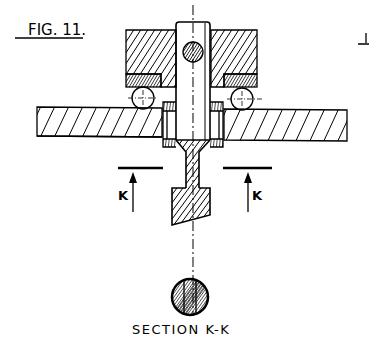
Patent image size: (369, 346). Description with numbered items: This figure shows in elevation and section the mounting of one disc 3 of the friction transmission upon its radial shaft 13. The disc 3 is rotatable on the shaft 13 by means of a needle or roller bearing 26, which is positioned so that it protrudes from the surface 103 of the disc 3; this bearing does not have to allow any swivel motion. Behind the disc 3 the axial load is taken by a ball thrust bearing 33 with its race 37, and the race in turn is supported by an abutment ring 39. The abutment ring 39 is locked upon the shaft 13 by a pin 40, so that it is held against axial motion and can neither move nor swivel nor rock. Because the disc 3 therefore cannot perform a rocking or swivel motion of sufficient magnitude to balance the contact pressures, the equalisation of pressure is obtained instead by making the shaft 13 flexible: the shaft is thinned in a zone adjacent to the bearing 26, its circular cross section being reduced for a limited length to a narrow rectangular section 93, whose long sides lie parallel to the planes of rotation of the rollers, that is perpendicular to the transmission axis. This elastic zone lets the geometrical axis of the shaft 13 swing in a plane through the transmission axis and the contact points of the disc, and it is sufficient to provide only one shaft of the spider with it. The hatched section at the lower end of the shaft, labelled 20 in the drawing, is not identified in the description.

The disc 3 is at (70, 110).
The radial shaft 13 is at (183, 36).
The lower block 20 is at (210, 213).
The needle bearing 26 is at (162, 128).
The ball thrust bearing 33 is at (253, 99).
The race 37 is at (258, 83).
The abutment ring 39 is at (252, 45).
The pin 40 is at (197, 47).
The narrow rectangular section 93 is at (185, 173).
The surface of the disc 103 is at (100, 137).